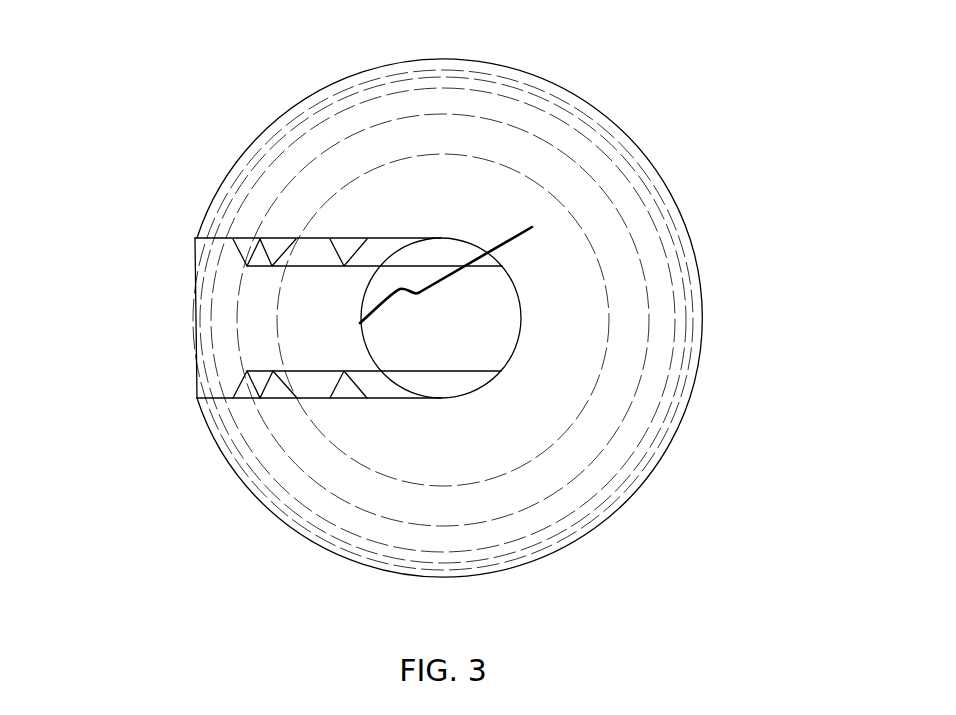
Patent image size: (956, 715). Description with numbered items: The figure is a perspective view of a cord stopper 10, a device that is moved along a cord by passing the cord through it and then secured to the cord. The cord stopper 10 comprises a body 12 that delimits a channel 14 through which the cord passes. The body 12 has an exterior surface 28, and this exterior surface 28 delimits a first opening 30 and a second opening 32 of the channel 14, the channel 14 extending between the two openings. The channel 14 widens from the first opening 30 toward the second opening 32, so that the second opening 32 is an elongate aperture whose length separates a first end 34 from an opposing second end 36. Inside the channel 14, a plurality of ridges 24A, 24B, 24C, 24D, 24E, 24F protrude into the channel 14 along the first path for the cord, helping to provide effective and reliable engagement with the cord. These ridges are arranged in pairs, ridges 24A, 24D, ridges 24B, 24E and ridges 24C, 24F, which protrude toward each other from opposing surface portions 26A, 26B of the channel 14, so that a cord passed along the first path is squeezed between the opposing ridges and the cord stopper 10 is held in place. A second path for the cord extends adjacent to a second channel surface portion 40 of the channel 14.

The cord stopper 10 is at (98, 160).
The body 12 is at (437, 103).
The channel 14 is at (452, 300).
The ridge 24A is at (245, 388).
The ridge 24B is at (290, 388).
The ridge 24C is at (383, 387).
The ridge 24D is at (248, 250).
The ridge 24E is at (313, 252).
The ridge 24F is at (407, 253).
The opposing surface portion 26A is at (423, 398).
The opposing surface portion 26B is at (423, 238).
The exterior surface 28 is at (553, 80).
The first opening 30 is at (500, 335).
The second opening 32 is at (250, 300).
The first end 34 is at (522, 316).
The second end 36 is at (200, 324).
The second channel surface portion 40 is at (295, 323).